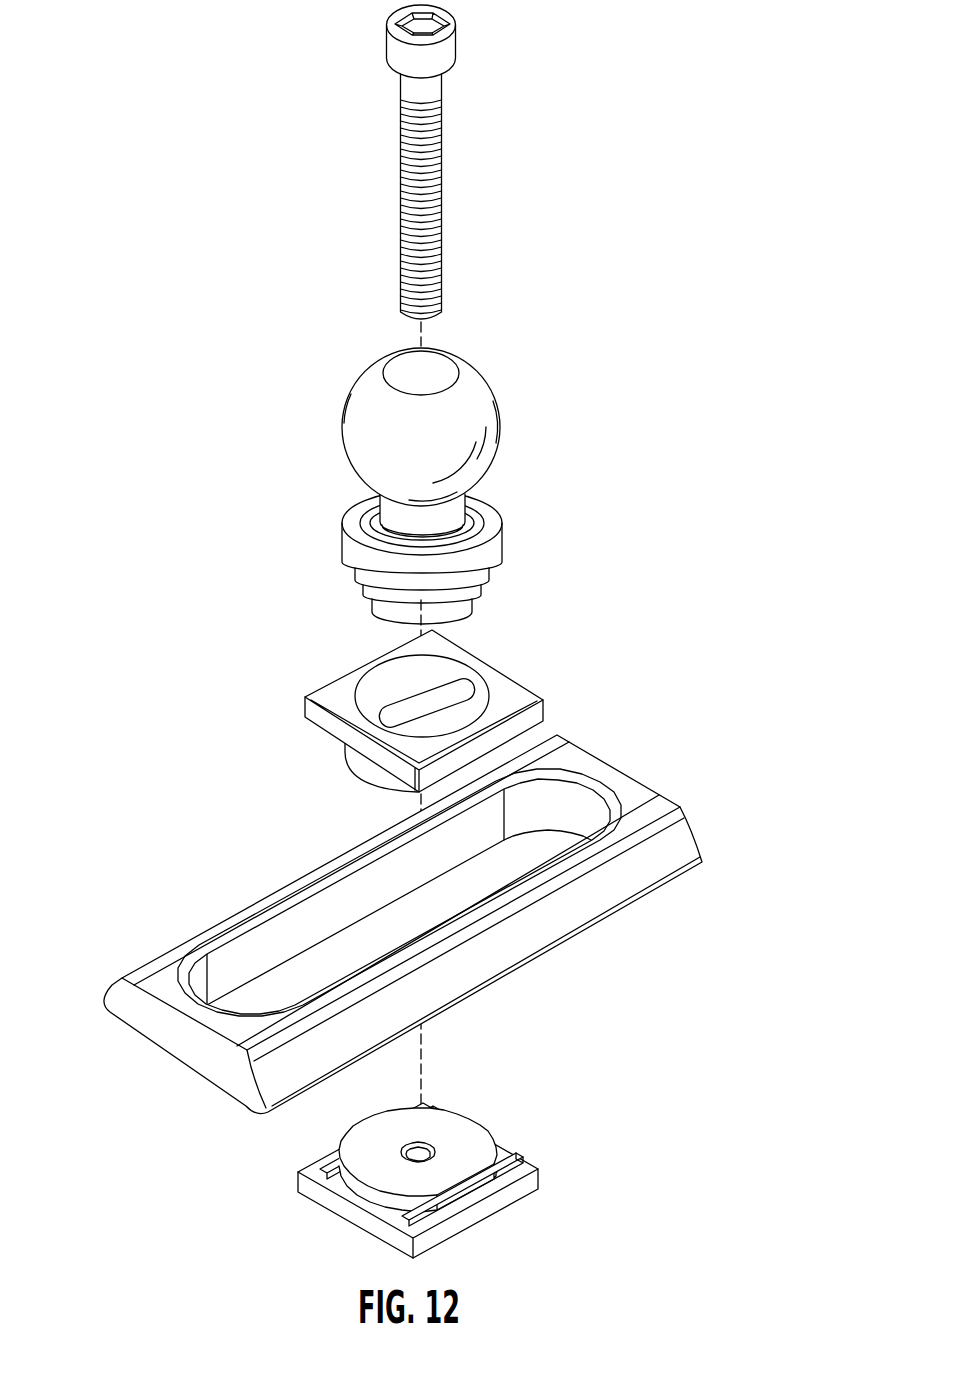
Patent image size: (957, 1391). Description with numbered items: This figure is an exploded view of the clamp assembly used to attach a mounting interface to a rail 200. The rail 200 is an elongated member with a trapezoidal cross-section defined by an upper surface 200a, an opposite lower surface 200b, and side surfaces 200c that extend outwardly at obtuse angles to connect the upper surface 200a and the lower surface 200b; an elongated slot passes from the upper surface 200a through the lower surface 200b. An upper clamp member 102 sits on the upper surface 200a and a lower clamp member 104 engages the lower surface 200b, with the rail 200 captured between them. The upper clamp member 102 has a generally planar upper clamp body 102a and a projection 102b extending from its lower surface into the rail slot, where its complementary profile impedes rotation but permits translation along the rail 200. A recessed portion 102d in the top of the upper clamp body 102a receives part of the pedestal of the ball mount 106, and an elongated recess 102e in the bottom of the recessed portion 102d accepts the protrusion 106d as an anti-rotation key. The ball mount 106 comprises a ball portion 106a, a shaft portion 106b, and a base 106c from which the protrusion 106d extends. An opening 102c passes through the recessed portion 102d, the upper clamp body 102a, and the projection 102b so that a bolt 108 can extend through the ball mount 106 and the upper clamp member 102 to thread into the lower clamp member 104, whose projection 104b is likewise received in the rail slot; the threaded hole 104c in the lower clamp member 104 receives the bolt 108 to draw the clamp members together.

The bolt 108 is at (467, 172).
The ball mount 106 is at (408, 500).
The ball portion 106a is at (355, 437).
The shaft portion 106b is at (443, 522).
The base 106c is at (353, 560).
The protrusion 106d is at (395, 615).
The upper clamp member 102 is at (433, 710).
The upper clamp body 102a is at (315, 719).
The projection 102b is at (375, 778).
The opening 102c is at (426, 704).
The recessed portion 102d is at (469, 714).
The recess 102e is at (393, 709).
The rail 200 is at (410, 928).
The upper surface 200a is at (160, 973).
The lower surface 200b is at (197, 1078).
The side surfaces 200c is at (647, 873).
The lower clamp member 104 is at (434, 1168).
The projection 104b is at (450, 1110).
The threaded hole 104c is at (400, 1150).